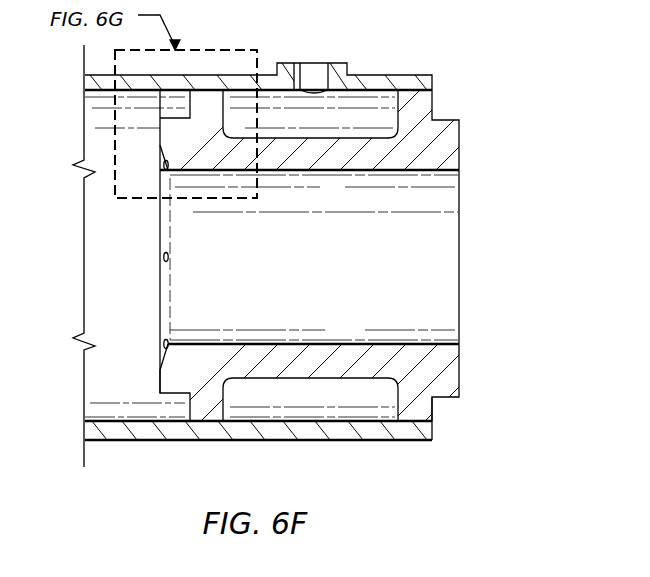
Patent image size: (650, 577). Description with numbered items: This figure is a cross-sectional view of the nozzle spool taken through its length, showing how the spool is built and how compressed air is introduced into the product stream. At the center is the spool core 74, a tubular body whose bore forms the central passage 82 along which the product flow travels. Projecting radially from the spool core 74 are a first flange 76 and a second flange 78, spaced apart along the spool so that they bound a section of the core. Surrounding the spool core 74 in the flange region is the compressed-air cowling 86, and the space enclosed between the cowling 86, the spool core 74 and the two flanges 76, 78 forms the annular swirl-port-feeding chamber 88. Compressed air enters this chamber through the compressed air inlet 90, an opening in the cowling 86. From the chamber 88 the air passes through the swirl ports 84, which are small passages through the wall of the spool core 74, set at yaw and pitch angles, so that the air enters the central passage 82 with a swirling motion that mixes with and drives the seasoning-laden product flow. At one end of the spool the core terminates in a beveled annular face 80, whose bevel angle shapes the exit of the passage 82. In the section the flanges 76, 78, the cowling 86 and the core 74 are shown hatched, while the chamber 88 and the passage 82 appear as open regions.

The spool core 74 is at (295, 378).
The first flange 76 is at (433, 105).
The second flange 78 is at (232, 403).
The annular face 80 is at (160, 357).
The central passage 82 is at (443, 273).
The swirl ports 84 is at (162, 257).
The compressed-air cowling 86 is at (373, 75).
The annular swirl-port-feeding chamber 88 is at (330, 125).
The compressed air inlet 90 is at (318, 77).